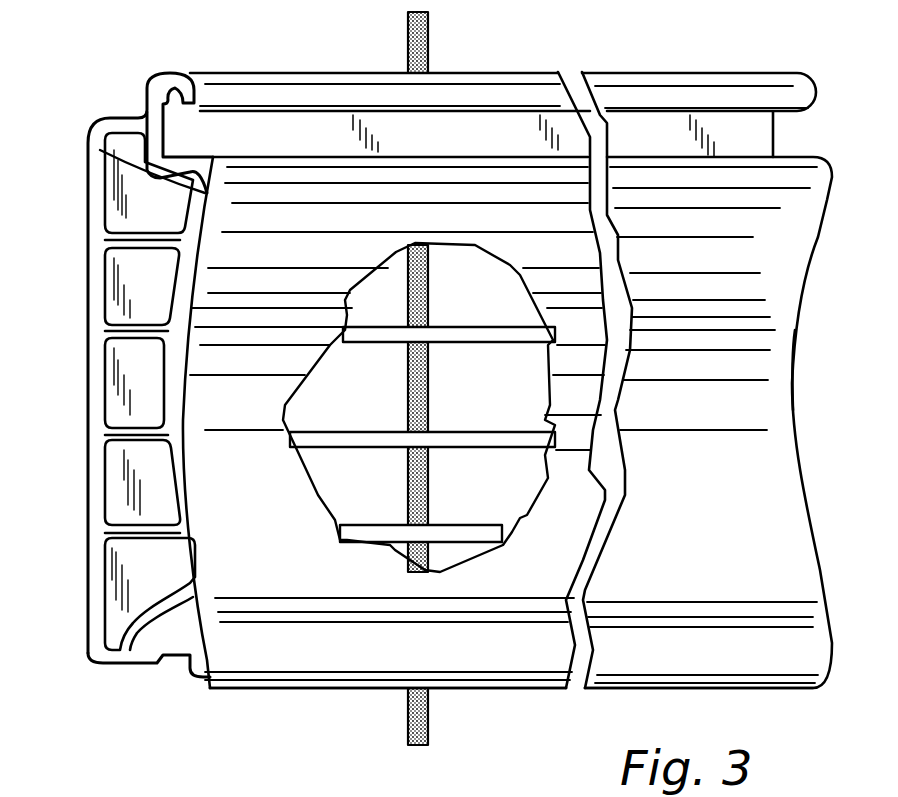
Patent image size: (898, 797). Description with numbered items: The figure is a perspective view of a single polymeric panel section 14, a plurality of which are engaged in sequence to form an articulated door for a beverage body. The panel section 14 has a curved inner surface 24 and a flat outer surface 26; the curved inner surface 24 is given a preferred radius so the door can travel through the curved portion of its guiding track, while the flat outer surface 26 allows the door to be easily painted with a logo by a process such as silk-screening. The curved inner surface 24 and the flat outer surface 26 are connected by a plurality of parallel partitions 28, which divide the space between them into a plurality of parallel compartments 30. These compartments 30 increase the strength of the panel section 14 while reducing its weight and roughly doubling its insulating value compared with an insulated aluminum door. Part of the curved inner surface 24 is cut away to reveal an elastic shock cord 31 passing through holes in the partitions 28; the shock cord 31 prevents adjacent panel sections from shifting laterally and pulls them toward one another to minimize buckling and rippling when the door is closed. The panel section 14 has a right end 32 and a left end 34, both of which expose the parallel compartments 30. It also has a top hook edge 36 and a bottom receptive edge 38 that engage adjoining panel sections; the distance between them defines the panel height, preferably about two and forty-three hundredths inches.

The panel section 14 is at (280, 705).
The curved inner surface 24 is at (760, 475).
The flat outer surface 26 is at (85, 640).
The parallel partitions 28 is at (440, 327).
The parallel compartments 30 is at (133, 128).
The elastic shock cord 31 is at (408, 40).
The right end 32 is at (140, 180).
The left end 34 is at (797, 376).
The top hook edge 36 is at (485, 73).
The bottom receptive edge 38 is at (455, 690).